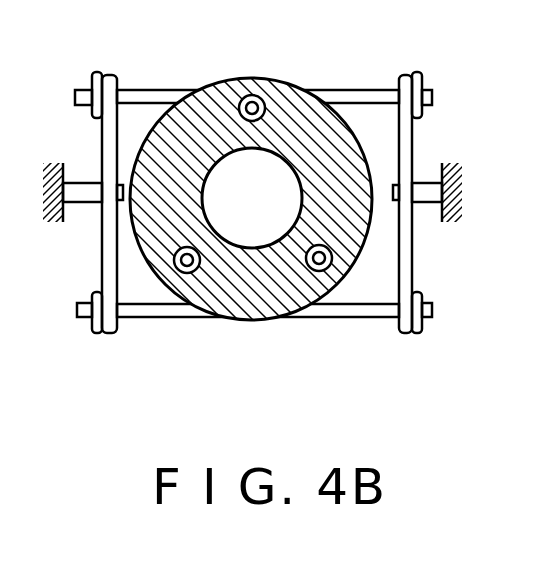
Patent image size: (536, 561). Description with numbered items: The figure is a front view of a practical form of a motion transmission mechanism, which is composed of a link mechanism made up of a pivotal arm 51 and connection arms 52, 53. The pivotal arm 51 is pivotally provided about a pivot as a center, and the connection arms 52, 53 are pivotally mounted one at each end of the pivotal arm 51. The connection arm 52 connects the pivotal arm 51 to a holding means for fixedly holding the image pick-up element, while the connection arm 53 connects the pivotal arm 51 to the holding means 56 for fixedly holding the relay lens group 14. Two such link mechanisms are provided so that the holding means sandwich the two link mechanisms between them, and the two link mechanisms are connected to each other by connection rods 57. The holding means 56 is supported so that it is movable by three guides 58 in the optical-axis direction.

The relay lens group 14 is at (293, 203).
The pivotal arm 51 is at (102, 145).
The connection arm 52 is at (97, 73).
The connection arm 53 is at (93, 297).
The holding means 56 is at (242, 321).
The connection rod 57 is at (158, 90).
The guide 58 is at (258, 96).